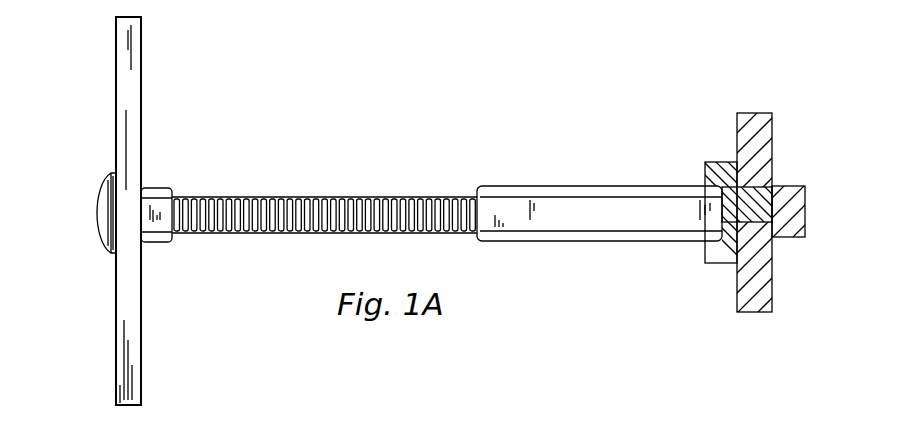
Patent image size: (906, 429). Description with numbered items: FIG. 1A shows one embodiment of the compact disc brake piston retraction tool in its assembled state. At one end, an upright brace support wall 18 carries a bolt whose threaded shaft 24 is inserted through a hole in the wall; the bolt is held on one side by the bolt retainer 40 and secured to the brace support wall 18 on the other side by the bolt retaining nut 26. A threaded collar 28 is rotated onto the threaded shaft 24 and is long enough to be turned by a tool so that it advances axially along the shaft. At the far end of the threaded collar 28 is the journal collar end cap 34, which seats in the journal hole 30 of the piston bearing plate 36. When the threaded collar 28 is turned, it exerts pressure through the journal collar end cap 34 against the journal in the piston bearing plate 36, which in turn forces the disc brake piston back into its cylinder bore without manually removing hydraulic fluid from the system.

The brace support wall 18 is at (142, 65).
The bolt retainer 40 is at (108, 187).
The bolt retaining nut 26 is at (143, 190).
The bolt having threaded shaft 24 is at (280, 200).
The threaded collar 28 is at (528, 193).
The journal collar end cap 34 is at (706, 173).
The journal hole 30 is at (752, 197).
The piston bearing plate 36 is at (737, 297).